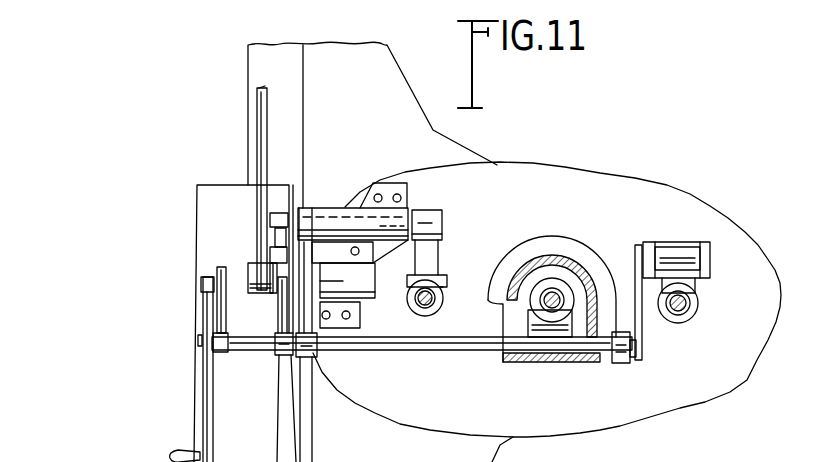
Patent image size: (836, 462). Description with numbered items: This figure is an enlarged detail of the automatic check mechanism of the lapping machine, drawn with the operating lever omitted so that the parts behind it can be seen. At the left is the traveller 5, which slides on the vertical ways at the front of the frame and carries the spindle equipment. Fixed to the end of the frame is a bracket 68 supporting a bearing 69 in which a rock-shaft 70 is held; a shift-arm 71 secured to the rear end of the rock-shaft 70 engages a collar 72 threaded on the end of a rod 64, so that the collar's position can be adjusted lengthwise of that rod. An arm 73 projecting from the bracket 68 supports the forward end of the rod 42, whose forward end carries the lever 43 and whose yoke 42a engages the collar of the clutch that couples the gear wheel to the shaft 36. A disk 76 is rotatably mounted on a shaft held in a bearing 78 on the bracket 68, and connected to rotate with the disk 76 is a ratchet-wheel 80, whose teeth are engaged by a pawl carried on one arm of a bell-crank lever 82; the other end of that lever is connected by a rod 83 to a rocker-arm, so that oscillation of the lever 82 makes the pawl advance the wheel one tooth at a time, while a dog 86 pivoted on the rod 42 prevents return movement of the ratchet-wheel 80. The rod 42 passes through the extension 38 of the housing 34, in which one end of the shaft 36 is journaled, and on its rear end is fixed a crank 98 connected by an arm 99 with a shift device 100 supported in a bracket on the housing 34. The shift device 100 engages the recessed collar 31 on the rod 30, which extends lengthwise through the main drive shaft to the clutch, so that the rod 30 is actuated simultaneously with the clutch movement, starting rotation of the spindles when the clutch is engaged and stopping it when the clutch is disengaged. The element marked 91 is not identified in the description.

The traveller 5 is at (200, 217).
The rod 30 is at (681, 306).
The recessed collar 31 is at (685, 323).
The housing 34 is at (627, 193).
The shaft 36 is at (557, 295).
The extension of the housing 38 is at (552, 258).
The rod 42 is at (350, 350).
The yoke 42a is at (548, 330).
The lever 43 is at (206, 380).
The rod 64 is at (423, 305).
The bracket 68 is at (388, 205).
The bearing 69 is at (398, 223).
The rock-shaft 70 is at (380, 235).
The shift-arm 71 is at (433, 253).
The collar 72 is at (440, 310).
The arm 73 is at (305, 358).
The disk 76 is at (290, 215).
The bearing 78 is at (328, 277).
The ratchet-wheel 80 is at (283, 250).
The bell-crank lever 82 is at (260, 252).
The rod 83 is at (258, 125).
The dog 86 is at (279, 322).
The rod 91 is at (223, 296).
The crank 98 is at (627, 363).
The arm 99 is at (642, 317).
The shift device 100 is at (692, 285).